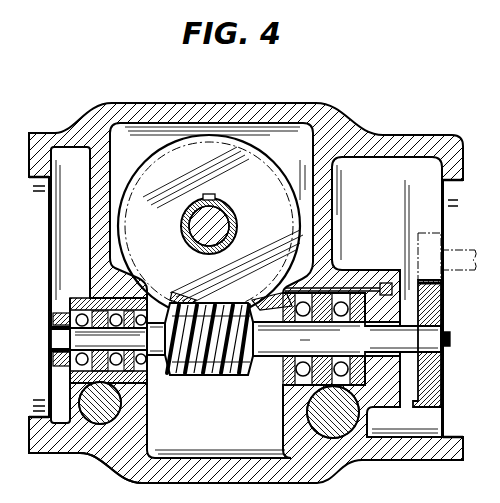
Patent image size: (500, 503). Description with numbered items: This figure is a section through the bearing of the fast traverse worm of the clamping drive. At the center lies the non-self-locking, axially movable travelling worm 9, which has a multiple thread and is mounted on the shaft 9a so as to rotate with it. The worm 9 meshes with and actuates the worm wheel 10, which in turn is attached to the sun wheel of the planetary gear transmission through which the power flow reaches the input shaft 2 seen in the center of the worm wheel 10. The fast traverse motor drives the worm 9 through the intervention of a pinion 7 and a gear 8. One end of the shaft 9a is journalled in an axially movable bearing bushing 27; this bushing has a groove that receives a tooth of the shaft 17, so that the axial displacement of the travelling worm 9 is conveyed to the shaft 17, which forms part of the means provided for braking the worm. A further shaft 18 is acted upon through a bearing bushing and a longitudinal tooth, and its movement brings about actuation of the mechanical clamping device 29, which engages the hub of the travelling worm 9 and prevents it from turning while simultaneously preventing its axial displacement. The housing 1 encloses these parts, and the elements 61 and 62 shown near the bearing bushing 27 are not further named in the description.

The housing 1 is at (333, 117).
The input shaft 2 is at (184, 233).
The pinion 7 is at (433, 247).
The gear 8 is at (432, 313).
The travelling worm 9 is at (210, 375).
The shaft 9a is at (270, 357).
The worm wheel 10 is at (273, 175).
The shaft 17 is at (84, 454).
The shaft 18 is at (345, 425).
The bearing bushing 27 is at (74, 290).
The clamping device 29 is at (340, 288).
The seal 61 is at (83, 393).
The pin 62 is at (122, 394).